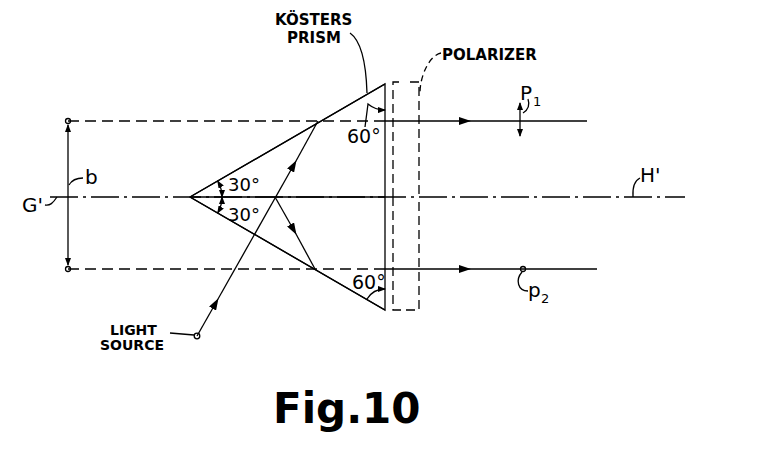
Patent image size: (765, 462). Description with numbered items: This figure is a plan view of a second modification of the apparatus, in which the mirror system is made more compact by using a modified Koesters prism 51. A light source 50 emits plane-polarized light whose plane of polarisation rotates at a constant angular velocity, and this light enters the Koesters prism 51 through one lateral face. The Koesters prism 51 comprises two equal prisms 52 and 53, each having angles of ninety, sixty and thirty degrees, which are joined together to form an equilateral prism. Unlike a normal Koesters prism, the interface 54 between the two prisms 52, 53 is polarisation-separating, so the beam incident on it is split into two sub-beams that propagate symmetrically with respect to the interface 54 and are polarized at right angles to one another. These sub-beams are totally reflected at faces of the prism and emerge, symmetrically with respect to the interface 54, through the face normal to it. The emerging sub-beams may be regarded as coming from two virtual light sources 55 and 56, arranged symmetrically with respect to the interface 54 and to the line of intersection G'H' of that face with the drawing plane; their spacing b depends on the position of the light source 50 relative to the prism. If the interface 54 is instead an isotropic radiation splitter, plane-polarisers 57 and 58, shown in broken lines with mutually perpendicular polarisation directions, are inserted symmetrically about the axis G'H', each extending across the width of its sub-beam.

The light source 50 is at (197, 339).
The Koesters prism 51 is at (274, 258).
The prism 52 is at (338, 253).
The prism 53 is at (329, 132).
The interface 54 is at (327, 197).
The virtual light source 55 is at (71, 118).
The virtual light source 56 is at (74, 282).
The polariser 57 is at (404, 97).
The polariser 58 is at (421, 304).